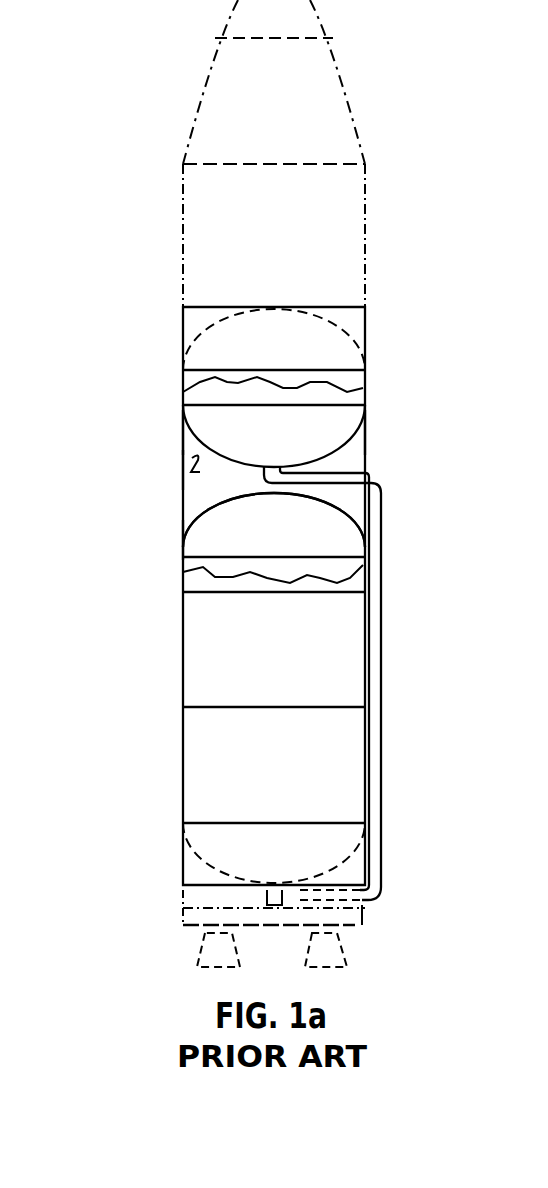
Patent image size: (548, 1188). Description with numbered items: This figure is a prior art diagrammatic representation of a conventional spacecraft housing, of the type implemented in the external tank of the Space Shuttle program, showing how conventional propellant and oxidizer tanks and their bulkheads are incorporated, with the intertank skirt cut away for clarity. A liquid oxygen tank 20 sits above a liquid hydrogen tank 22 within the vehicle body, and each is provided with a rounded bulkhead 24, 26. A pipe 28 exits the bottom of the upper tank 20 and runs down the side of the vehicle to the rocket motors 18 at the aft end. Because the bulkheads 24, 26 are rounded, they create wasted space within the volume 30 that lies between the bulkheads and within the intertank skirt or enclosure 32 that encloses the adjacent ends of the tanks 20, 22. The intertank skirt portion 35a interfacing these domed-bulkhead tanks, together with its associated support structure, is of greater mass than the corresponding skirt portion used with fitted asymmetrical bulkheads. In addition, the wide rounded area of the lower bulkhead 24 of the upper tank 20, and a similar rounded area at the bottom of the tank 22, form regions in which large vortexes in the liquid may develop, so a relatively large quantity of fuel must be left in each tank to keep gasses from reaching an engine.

The rocket motors 18 is at (365, 942).
The liquid oxygen tank 20 is at (273, 443).
The liquid hydrogen tank 22 is at (273, 541).
The rounded bulkhead 24 is at (183, 433).
The rounded bulkhead 26 is at (222, 502).
The pipe 28 is at (383, 527).
The volume 30 is at (183, 470).
The intertank skirt or enclosure 32 is at (365, 433).
The skirt portion 35a is at (185, 533).